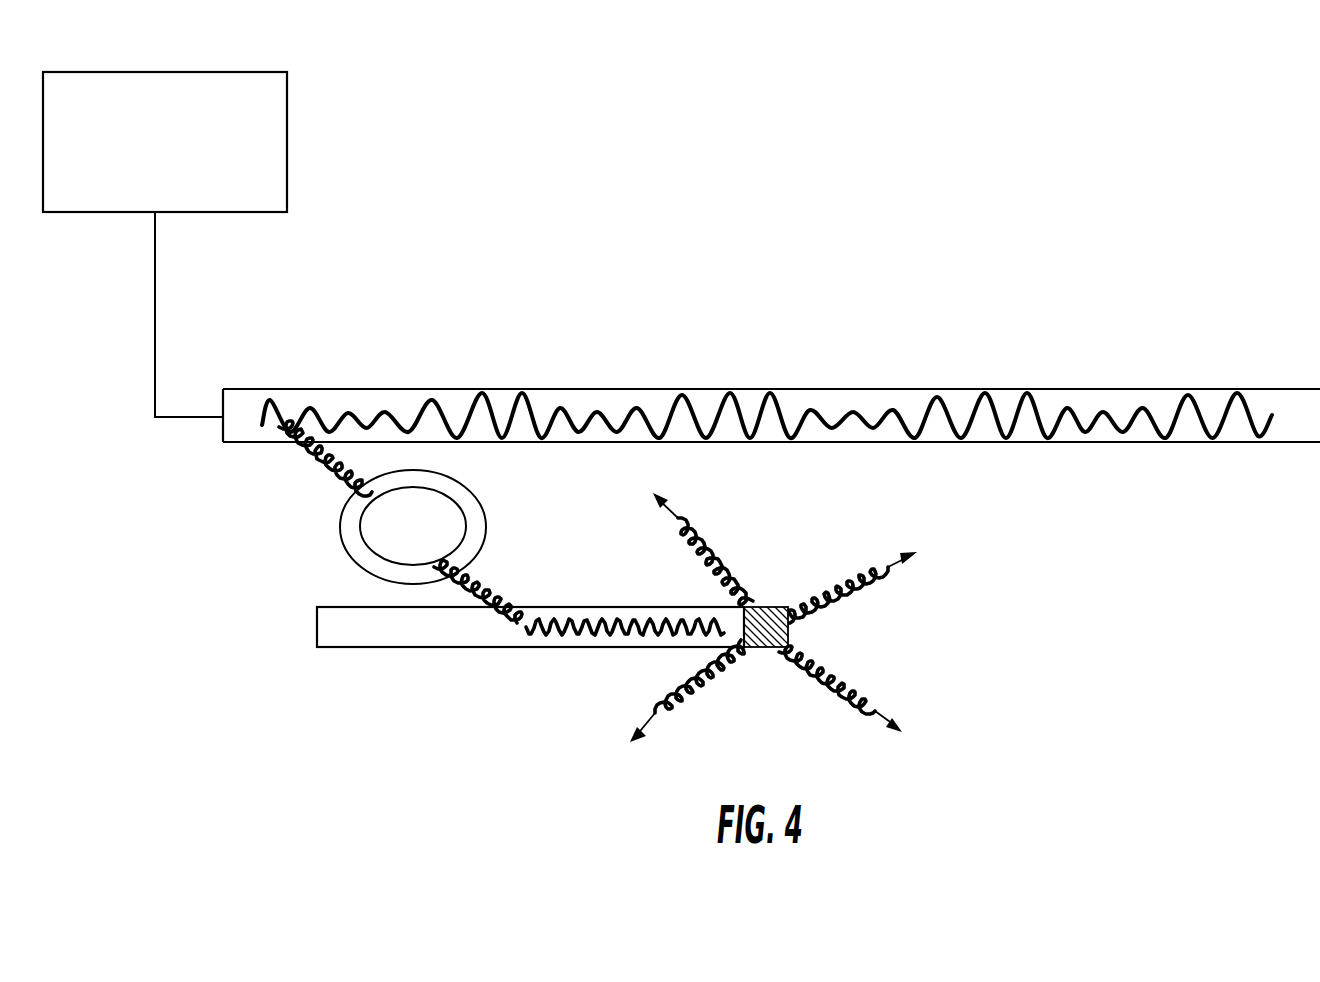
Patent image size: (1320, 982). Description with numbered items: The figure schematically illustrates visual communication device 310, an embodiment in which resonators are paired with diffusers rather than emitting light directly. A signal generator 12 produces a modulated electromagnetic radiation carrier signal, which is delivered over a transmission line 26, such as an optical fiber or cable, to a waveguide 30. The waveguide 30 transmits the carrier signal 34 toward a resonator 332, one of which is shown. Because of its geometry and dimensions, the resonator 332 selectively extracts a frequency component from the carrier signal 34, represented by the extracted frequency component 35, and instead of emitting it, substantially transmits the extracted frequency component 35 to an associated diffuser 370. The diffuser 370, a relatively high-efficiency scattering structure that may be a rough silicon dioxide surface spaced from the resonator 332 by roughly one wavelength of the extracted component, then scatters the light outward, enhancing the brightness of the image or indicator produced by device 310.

The signal generator 12 is at (287, 148).
The transmission line 26 is at (155, 336).
The waveguide 30 is at (1125, 388).
The carrier signal 34 is at (923, 404).
The extracted frequency component 35 is at (318, 452).
The visual communication device 310 is at (583, 237).
The resonator 332 is at (487, 538).
The diffuser 370 is at (603, 648).